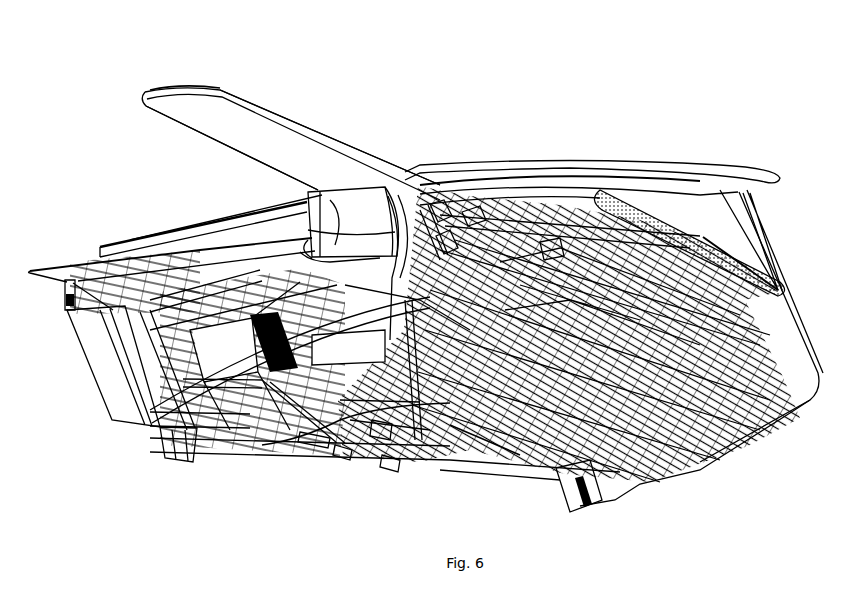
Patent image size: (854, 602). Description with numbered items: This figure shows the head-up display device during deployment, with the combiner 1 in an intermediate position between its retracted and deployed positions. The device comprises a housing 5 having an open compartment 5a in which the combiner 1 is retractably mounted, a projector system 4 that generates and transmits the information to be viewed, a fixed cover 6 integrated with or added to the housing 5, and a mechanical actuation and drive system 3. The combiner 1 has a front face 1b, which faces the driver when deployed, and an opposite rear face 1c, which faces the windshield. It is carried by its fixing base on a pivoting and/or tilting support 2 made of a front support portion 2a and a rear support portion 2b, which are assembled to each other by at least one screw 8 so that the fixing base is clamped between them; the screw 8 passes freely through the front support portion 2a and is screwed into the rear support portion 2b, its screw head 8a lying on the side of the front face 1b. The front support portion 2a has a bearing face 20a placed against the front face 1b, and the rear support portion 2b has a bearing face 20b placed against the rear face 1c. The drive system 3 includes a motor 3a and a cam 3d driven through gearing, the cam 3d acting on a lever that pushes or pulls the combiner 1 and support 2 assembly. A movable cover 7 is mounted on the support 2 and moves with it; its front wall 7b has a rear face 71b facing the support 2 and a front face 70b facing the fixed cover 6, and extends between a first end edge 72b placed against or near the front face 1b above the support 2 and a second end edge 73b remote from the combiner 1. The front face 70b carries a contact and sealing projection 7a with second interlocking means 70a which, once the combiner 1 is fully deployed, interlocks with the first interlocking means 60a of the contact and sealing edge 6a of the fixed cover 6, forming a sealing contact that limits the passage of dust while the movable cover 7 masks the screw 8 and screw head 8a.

The combiner 1 is at (285, 105).
The front face 1b is at (206, 115).
The rear face 1c is at (245, 98).
The pivoting and/or tilting support 2 is at (453, 452).
The front support portion 2a is at (476, 365).
The rear support portion 2b is at (556, 249).
The mechanical actuation and drive system 3 is at (564, 272).
The motor 3a is at (533, 370).
The cam 3d is at (648, 186).
The projector system 4 is at (260, 434).
The housing 5 is at (624, 156).
The compartment 5a is at (175, 230).
The fixed cover 6 is at (291, 270).
The contact and sealing edge 6a is at (340, 451).
The first male or female interlocking means 60a is at (313, 441).
The movable cover 7 is at (357, 220).
The contact and sealing projection 7a is at (390, 464).
The front wall 7b is at (311, 201).
The second complementary male or female interlocking means 70a is at (380, 428).
The front face 70b is at (347, 200).
The rear face 71b is at (430, 232).
The first end edge 72b is at (398, 228).
The second end edge 73b is at (413, 441).
The screw 8 is at (455, 226).
The screw head 8a is at (472, 216).
The bearing face 20a is at (440, 238).
The bearing face 20b is at (436, 208).